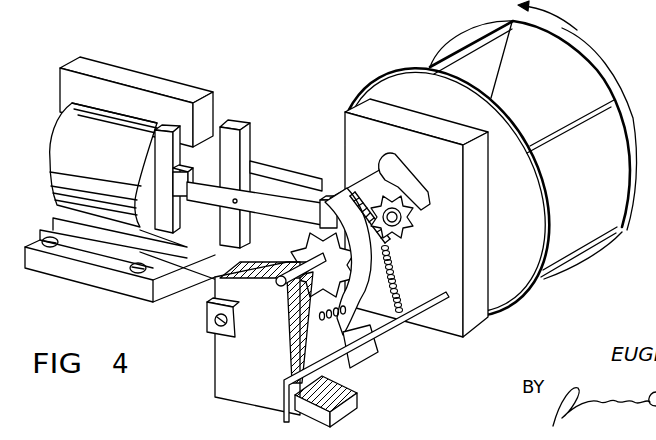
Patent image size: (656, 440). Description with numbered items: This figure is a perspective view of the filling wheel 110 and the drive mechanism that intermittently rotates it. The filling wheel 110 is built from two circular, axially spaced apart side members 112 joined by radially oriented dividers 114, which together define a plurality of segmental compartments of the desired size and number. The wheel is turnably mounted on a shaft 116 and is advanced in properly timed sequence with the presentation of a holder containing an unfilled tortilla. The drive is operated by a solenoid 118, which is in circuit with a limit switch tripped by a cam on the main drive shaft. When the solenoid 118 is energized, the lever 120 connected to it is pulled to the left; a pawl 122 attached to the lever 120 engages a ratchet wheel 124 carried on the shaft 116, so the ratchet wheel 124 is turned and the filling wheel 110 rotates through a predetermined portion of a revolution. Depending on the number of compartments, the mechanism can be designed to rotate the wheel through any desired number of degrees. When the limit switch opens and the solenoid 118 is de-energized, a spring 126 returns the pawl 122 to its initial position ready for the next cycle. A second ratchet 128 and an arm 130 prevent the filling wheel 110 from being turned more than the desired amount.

The filling wheel 110 is at (289, 40).
The side members 112 is at (400, 73).
The dividers 114 is at (560, 123).
The shaft 116 is at (277, 293).
The solenoid 118 is at (205, 84).
The lever 120 is at (298, 180).
The pawl 122 is at (408, 170).
The ratchet wheel 124 is at (420, 228).
The spring 126 is at (401, 287).
The second ratchet 128 is at (303, 247).
The arm 130 is at (387, 320).